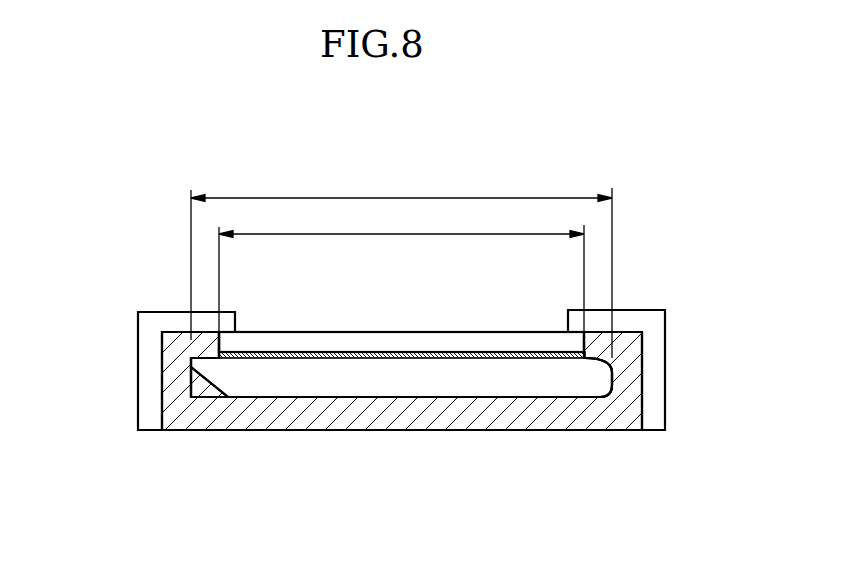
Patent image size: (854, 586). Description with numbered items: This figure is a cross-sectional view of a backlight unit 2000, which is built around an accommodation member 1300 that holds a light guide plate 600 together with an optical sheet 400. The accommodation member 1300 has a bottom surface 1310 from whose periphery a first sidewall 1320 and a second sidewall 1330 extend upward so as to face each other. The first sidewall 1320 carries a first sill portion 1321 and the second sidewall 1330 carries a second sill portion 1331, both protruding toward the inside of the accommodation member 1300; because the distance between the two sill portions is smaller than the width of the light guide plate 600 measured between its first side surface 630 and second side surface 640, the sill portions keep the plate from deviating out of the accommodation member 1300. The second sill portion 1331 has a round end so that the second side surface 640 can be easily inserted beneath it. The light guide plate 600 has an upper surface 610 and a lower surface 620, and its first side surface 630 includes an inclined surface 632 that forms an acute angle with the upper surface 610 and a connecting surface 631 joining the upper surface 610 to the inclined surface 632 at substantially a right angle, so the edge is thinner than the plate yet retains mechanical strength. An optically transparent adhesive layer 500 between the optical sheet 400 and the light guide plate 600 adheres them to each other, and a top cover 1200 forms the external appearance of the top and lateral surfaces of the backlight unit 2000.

The backlight unit 2000 is at (467, 132).
The top cover 1200 is at (138, 325).
The accommodation member 1300 is at (225, 508).
The bottom surface 1310 is at (400, 432).
The first sidewall 1320 is at (177, 402).
The first sill portion 1321 is at (208, 340).
The second sidewall 1330 is at (627, 400).
The second sill portion 1331 is at (595, 340).
The optical sheet 400 is at (482, 341).
The adhesive layer 500 is at (612, 370).
The light guide plate 600 is at (448, 378).
The upper surface 610 is at (500, 358).
The lower surface 620 is at (545, 398).
The first side surface 630 is at (73, 363).
The connecting surface 631 is at (191, 360).
The inclined surface 632 is at (220, 391).
The second side surface 640 is at (613, 389).